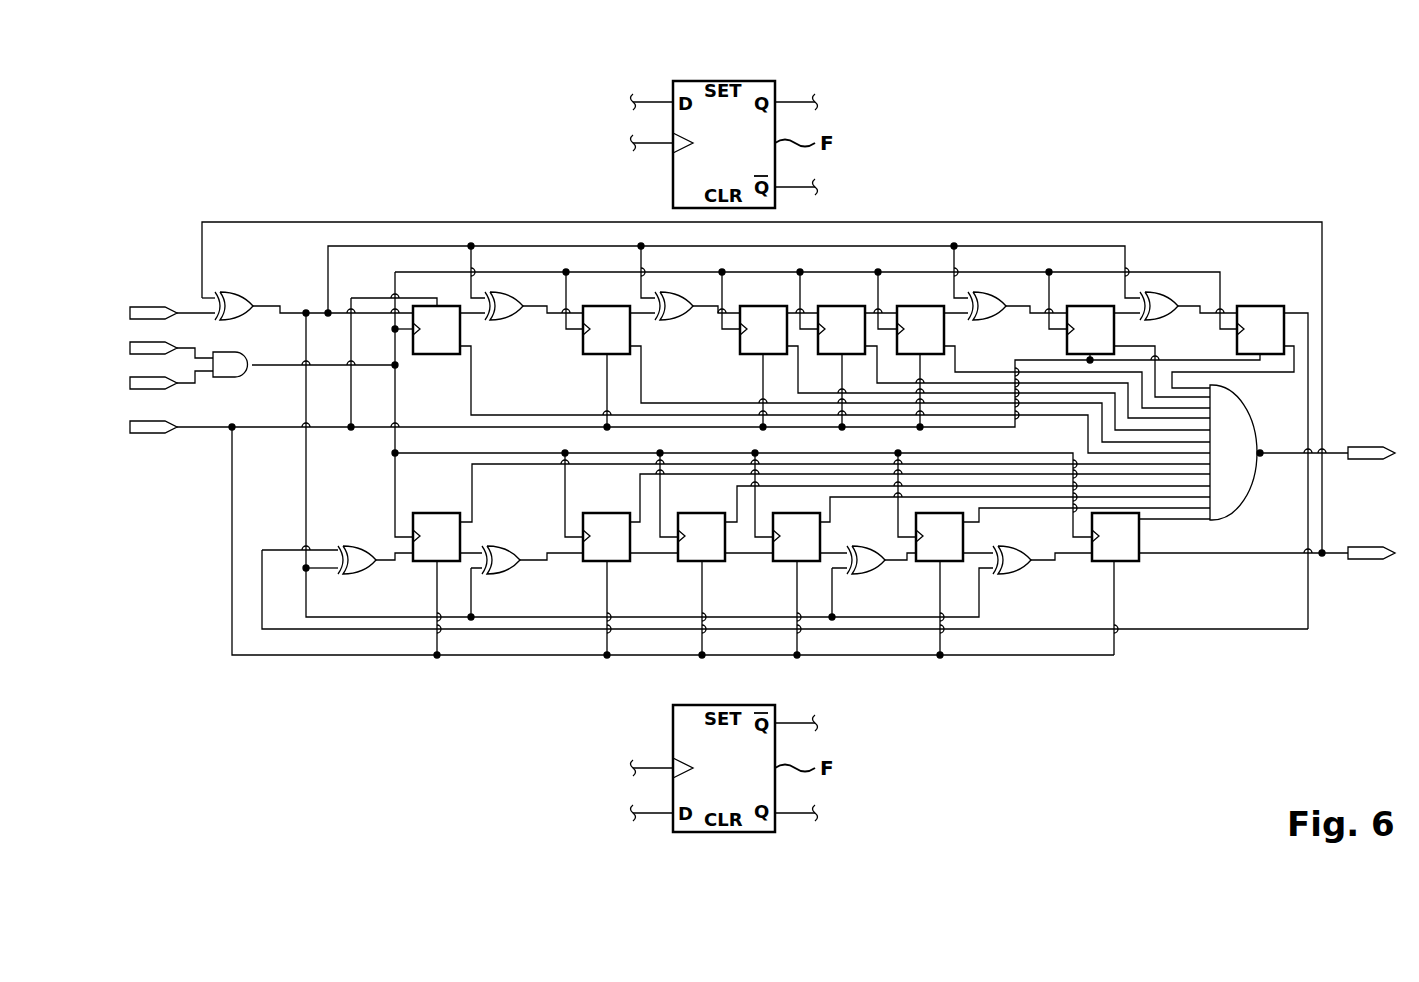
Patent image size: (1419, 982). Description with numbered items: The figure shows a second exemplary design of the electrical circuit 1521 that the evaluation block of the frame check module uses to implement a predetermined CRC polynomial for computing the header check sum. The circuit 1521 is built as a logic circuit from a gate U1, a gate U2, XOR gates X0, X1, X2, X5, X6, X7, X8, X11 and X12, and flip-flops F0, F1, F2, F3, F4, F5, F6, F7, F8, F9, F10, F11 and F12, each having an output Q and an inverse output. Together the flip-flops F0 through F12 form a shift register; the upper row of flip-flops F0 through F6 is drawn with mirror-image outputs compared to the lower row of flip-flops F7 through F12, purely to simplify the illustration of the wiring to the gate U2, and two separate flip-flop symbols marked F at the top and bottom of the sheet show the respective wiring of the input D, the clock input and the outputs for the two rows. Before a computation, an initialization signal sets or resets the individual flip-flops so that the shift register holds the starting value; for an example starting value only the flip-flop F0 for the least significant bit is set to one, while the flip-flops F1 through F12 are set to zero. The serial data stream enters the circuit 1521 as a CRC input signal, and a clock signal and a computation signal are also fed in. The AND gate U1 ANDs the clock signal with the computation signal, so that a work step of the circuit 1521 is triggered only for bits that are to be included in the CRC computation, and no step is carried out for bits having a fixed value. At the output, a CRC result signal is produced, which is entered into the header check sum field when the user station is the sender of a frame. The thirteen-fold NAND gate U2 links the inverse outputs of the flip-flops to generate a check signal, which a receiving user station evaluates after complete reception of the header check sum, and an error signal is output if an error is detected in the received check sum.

The electrical circuit 1521 is at (1178, 186).
The AND gate U1 is at (230, 377).
The 13-fold NAND gate U2 is at (1233, 452).
The flip-flop F0 is at (436, 330).
The flip-flop F1 is at (606, 330).
The flip-flop F2 is at (763, 330).
The flip-flop F3 is at (841, 330).
The flip-flop F4 is at (920, 330).
The flip-flop F5 is at (1090, 330).
The flip-flop F6 is at (1260, 330).
The flip-flop F7 is at (436, 537).
The flip-flop F8 is at (606, 537).
The flip-flop F9 is at (701, 537).
The flip-flop F10 is at (796, 537).
The flip-flop F11 is at (939, 537).
The flip-flop F12 is at (1115, 537).
The XOR gate X0 is at (234, 322).
The XOR gate X1 is at (504, 322).
The XOR gate X2 is at (674, 322).
The XOR gate X5 is at (987, 322).
The XOR gate X6 is at (1159, 322).
The XOR gate X7 is at (357, 577).
The XOR gate X8 is at (501, 577).
The XOR gate X11 is at (869, 577).
The XOR gate X12 is at (1015, 577).